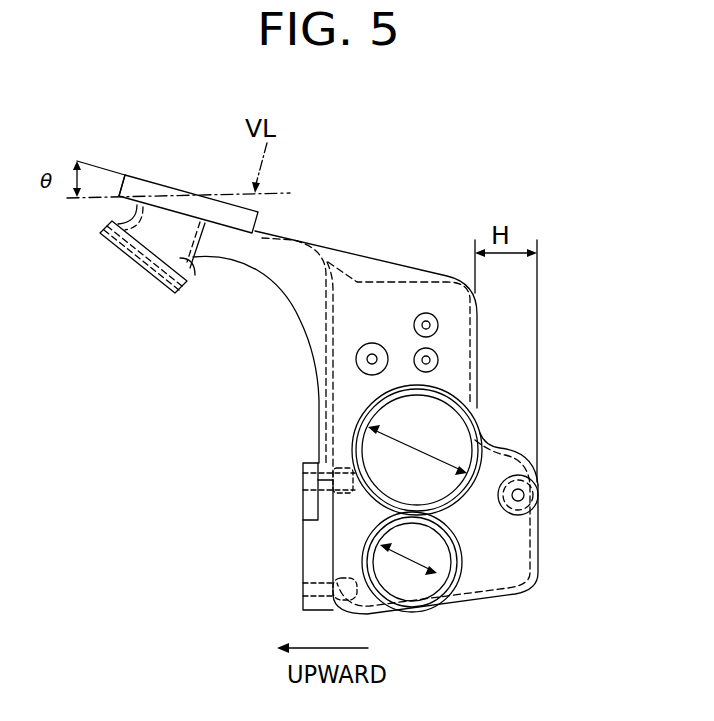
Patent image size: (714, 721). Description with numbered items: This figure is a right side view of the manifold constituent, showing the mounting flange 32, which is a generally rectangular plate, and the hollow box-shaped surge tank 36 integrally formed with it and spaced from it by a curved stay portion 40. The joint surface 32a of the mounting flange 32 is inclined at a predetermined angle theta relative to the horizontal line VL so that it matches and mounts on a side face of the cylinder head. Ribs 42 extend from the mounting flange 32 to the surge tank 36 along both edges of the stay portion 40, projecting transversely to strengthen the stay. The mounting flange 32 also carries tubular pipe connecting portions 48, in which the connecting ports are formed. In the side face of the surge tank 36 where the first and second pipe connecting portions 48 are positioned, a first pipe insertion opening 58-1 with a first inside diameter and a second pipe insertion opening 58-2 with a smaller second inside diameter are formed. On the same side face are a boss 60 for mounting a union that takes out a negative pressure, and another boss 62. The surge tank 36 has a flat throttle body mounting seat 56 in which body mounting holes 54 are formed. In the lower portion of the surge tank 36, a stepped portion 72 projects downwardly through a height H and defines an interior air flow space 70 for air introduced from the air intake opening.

The mounting flange 32 is at (260, 219).
The joint surface 32a is at (142, 177).
The surge tank 36 is at (507, 594).
The stay portion 40 is at (312, 253).
The ribs 42 is at (290, 290).
The tubular pipe connecting portions 48 is at (180, 258).
The body mounting holes 54 is at (303, 483).
The throttle body mounting seat 56 is at (312, 540).
The first pipe insertion opening 58-1 is at (435, 432).
The second pipe insertion opening 58-2 is at (433, 552).
The boss 60 is at (371, 343).
The boss 62 is at (538, 485).
The interior air flow space 70 is at (518, 532).
The stepped portion 72 is at (500, 450).